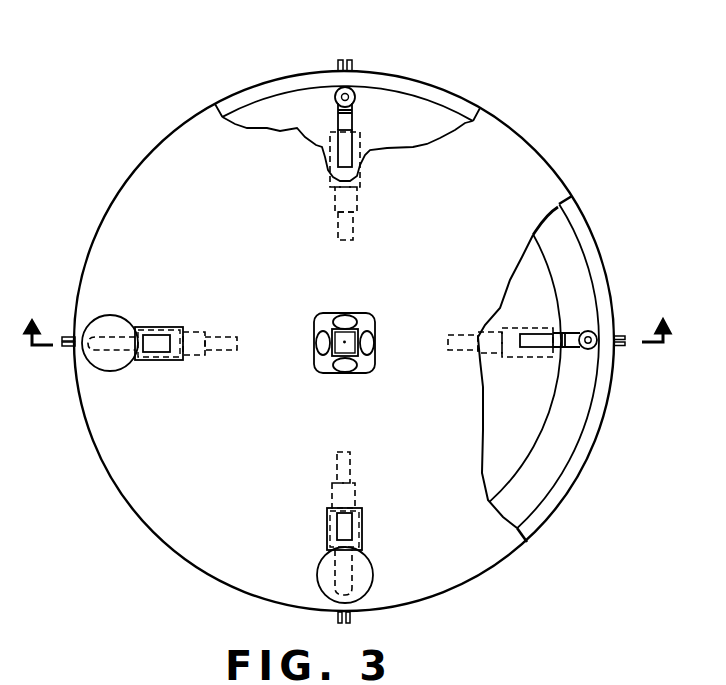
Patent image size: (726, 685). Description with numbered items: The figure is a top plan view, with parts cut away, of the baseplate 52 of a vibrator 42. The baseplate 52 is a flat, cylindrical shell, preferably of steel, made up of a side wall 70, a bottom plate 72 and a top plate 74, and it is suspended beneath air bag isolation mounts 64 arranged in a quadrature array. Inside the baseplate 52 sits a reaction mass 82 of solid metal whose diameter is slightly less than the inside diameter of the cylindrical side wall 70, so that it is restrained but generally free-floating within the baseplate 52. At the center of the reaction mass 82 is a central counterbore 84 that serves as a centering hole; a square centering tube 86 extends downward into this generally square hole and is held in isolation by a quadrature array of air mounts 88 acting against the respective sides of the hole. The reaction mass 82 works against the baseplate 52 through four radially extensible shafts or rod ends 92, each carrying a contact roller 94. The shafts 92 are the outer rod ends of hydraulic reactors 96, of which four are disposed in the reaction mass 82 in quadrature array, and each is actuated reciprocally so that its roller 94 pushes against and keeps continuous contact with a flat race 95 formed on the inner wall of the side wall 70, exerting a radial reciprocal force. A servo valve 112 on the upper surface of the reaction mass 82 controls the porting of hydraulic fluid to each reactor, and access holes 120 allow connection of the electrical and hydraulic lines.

The vibrator 42 is at (490, 93).
The baseplate 52 is at (537, 150).
The air bag isolation mounts 64 is at (325, 575).
The side wall 70 is at (588, 252).
The bottom plate 72 is at (555, 238).
The top plate 74 is at (540, 198).
The reaction mass 82 is at (524, 419).
The central counterbore 84 is at (365, 320).
The square centering tube 86 is at (333, 357).
The air mounts 88 is at (345, 315).
The shafts or rod ends 92 is at (348, 118).
The contact rollers 94 is at (360, 88).
The flat race 95 is at (336, 87).
The hydraulic reactor 96 is at (358, 190).
The servo valve 112 is at (345, 145).
The access holes 120 is at (362, 527).